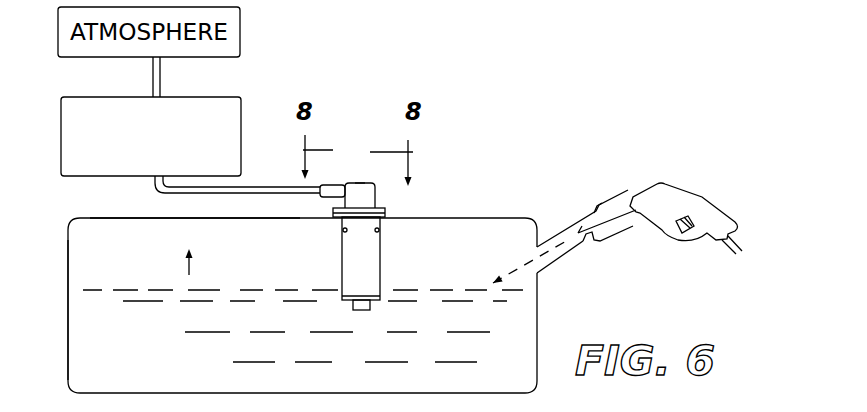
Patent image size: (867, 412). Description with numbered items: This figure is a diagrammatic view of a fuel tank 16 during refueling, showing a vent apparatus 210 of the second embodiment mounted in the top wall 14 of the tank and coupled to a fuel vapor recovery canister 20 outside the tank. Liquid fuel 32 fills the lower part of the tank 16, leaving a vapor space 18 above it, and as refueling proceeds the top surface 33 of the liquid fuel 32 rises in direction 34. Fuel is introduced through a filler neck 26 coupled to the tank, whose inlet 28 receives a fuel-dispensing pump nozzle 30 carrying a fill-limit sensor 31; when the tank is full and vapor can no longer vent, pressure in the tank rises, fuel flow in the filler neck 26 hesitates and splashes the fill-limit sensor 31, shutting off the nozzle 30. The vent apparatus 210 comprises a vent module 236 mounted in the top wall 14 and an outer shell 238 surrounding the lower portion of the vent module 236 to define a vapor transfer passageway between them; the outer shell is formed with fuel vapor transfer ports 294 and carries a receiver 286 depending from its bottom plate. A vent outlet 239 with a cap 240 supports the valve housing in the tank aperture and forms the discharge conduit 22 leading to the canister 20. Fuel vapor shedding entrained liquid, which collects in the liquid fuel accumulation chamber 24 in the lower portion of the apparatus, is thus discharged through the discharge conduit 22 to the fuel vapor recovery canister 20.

The top wall 14 is at (502, 217).
The fuel tank 16 is at (60, 301).
The vapor space 18 is at (95, 245).
The fuel vapor recovery canister 20 is at (60, 143).
The discharge conduit 22 is at (265, 187).
The liquid fuel accumulation chamber 24 is at (369, 218).
The filler neck 26 is at (558, 231).
The inlet 28 is at (604, 208).
The fuel-dispensing pump nozzle 30 is at (675, 203).
The fill-limit sensor 31 is at (595, 233).
The liquid fuel 32 is at (148, 356).
The top surface 33 is at (163, 287).
The direction 34 is at (190, 270).
The vent apparatus 210 is at (328, 253).
The vent module 236 is at (380, 181).
The outer shell 238 is at (390, 311).
The vent outlet 239 is at (410, 207).
The cap 240 is at (357, 175).
The receiver 286 is at (346, 306).
The fuel vapor transfer port 294 is at (385, 236).